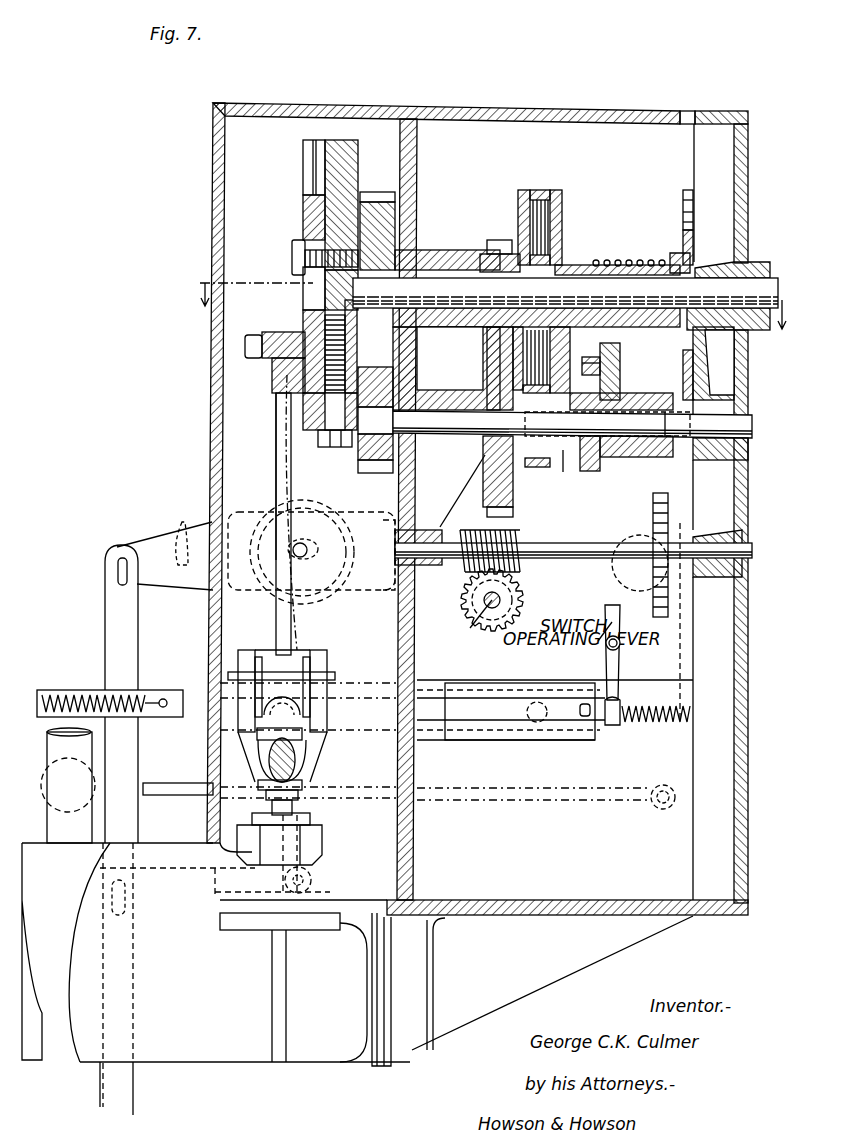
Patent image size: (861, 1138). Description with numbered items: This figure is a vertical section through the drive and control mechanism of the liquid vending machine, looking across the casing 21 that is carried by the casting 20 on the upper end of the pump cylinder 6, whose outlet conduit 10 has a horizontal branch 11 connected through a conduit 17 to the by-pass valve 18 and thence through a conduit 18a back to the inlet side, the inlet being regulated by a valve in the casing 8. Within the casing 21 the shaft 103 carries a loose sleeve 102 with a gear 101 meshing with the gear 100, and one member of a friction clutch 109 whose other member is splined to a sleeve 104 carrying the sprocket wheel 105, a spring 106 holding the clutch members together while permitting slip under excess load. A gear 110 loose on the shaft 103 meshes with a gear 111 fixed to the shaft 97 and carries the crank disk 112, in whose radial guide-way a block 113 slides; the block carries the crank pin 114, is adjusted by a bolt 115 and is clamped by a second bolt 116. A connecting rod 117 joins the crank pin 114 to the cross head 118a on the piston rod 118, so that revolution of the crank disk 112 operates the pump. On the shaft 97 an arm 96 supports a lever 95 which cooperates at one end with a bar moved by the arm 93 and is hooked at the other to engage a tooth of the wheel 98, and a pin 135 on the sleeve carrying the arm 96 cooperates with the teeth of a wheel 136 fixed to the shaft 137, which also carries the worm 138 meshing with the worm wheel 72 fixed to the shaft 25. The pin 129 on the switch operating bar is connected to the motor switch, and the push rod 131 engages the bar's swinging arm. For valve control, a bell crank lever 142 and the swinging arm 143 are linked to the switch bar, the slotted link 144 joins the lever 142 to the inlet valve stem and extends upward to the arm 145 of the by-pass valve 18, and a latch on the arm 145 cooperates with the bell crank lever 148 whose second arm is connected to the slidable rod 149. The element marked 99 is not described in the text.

The pump cylinder 6 is at (238, 1058).
The inlet valve casing 8 is at (487, 316).
The outlet conduit 10 is at (33, 848).
The horizontal branch pipe 11 is at (46, 775).
The conduit 17 is at (282, 547).
The by-pass valve 18 is at (262, 590).
The conduit 18a is at (388, 585).
The casting 20 is at (280, 990).
The casing 21 is at (535, 108).
The shaft 25 is at (471, 622).
The worm wheel 72 is at (523, 606).
The arm 93 is at (535, 472).
The lever 95 is at (590, 357).
The arm 96 is at (620, 365).
The shaft 97 is at (585, 423).
The toothed wheel 98 is at (596, 470).
The pin 99 is at (559, 471).
The gear 100 is at (513, 495).
The gear 101 is at (498, 240).
The sleeve 102 is at (508, 272).
The shaft 103 is at (565, 291).
The sleeve 104 is at (636, 262).
The sprocket wheel 105 is at (683, 197).
The spring 106 is at (596, 260).
The friction clutch 109 is at (528, 290).
The gear 110 is at (395, 218).
The gear 111 is at (372, 460).
The crank disk 112 is at (358, 163).
The block 113 is at (315, 308).
The crank pin 114 is at (272, 345).
The bolt 115 is at (333, 447).
The bolt 116 is at (298, 258).
The connecting rod 117 is at (276, 470).
The piston rod 118 is at (238, 690).
The cross head 118a is at (296, 765).
The pin 129 is at (611, 726).
The push rod 131 is at (60, 690).
The pin 135 is at (665, 438).
The toothed wheel 136 is at (653, 497).
The shaft 137 is at (585, 550).
The worm 138 is at (515, 533).
The bell crank lever 142 is at (170, 898).
The swinging arm 143 is at (312, 615).
The link 144 is at (118, 830).
The arm 145 is at (182, 585).
The bell crank lever 148 is at (680, 652).
The slidable rod 149 is at (510, 795).